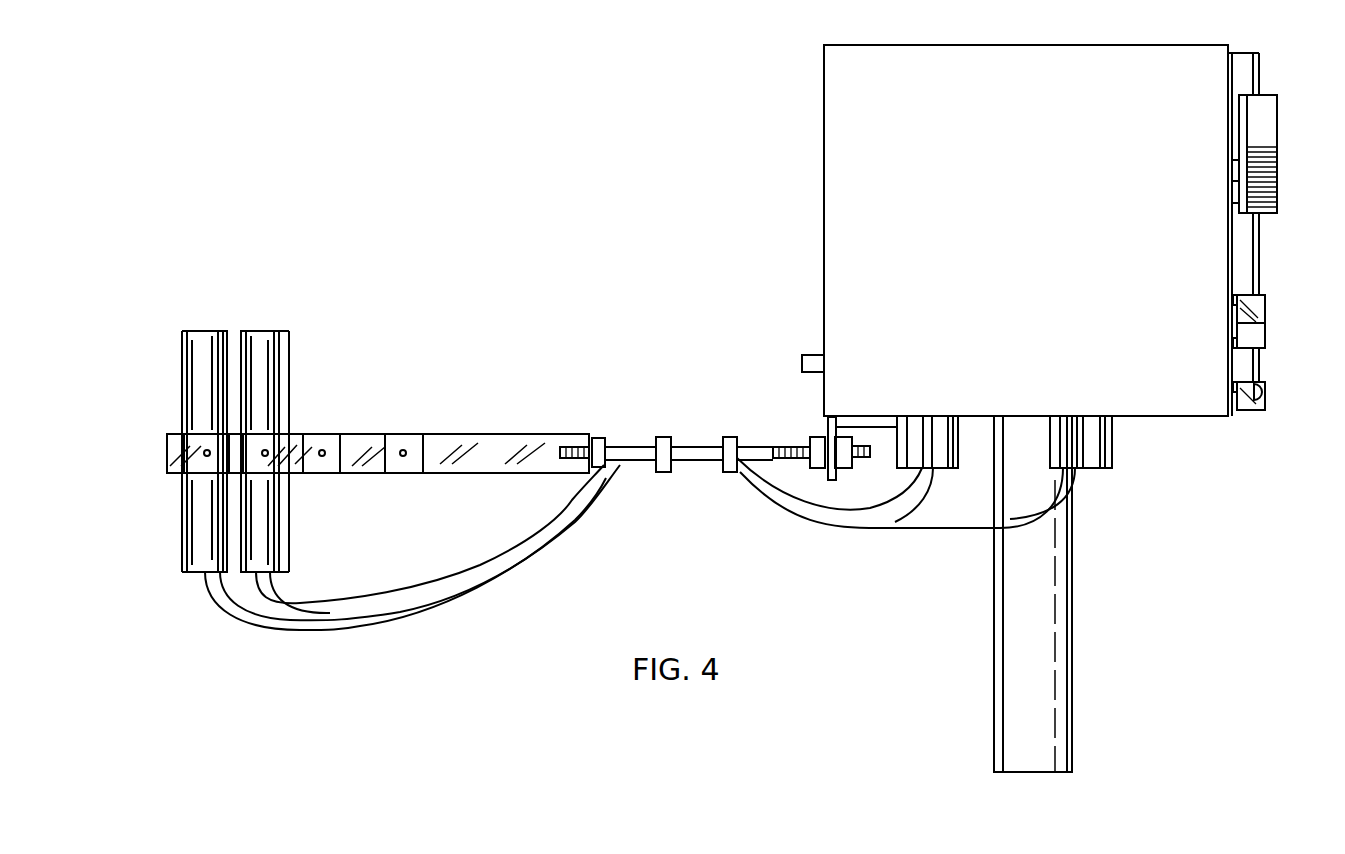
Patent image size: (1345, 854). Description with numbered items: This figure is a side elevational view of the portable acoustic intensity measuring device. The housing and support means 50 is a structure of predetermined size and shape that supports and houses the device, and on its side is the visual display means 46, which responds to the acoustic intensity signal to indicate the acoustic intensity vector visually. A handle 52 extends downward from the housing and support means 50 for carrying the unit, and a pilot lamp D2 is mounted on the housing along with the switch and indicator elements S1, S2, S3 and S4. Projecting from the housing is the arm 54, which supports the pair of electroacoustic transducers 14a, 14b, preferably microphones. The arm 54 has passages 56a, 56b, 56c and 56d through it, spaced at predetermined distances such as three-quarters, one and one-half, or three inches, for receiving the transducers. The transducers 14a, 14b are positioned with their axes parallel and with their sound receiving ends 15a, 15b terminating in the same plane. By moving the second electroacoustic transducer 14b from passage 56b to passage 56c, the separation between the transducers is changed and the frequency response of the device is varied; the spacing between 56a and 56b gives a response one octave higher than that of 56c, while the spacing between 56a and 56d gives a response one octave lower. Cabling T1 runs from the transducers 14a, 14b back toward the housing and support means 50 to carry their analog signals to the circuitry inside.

The housing and support means 50 is at (822, 65).
The visual display means 46 is at (1261, 77).
The sensor S1 is at (1268, 115).
The sensor S2 is at (1237, 299).
The sensor S3 is at (1237, 389).
The sensor S4 is at (1265, 318).
The pilot lamp D2 is at (1255, 383).
The handle 52 is at (1073, 557).
The arm 54 is at (497, 436).
The passage 56a is at (186, 440).
The passage 56b is at (284, 438).
The passage 56c is at (342, 438).
The passage 56d is at (413, 438).
The first electroacoustic transducer 14a is at (205, 331).
The second electroacoustic transducer 14b is at (265, 331).
The sound receiving end 15a is at (183, 338).
The sound receiving end 15b is at (289, 336).
The tubing T1 is at (300, 615).